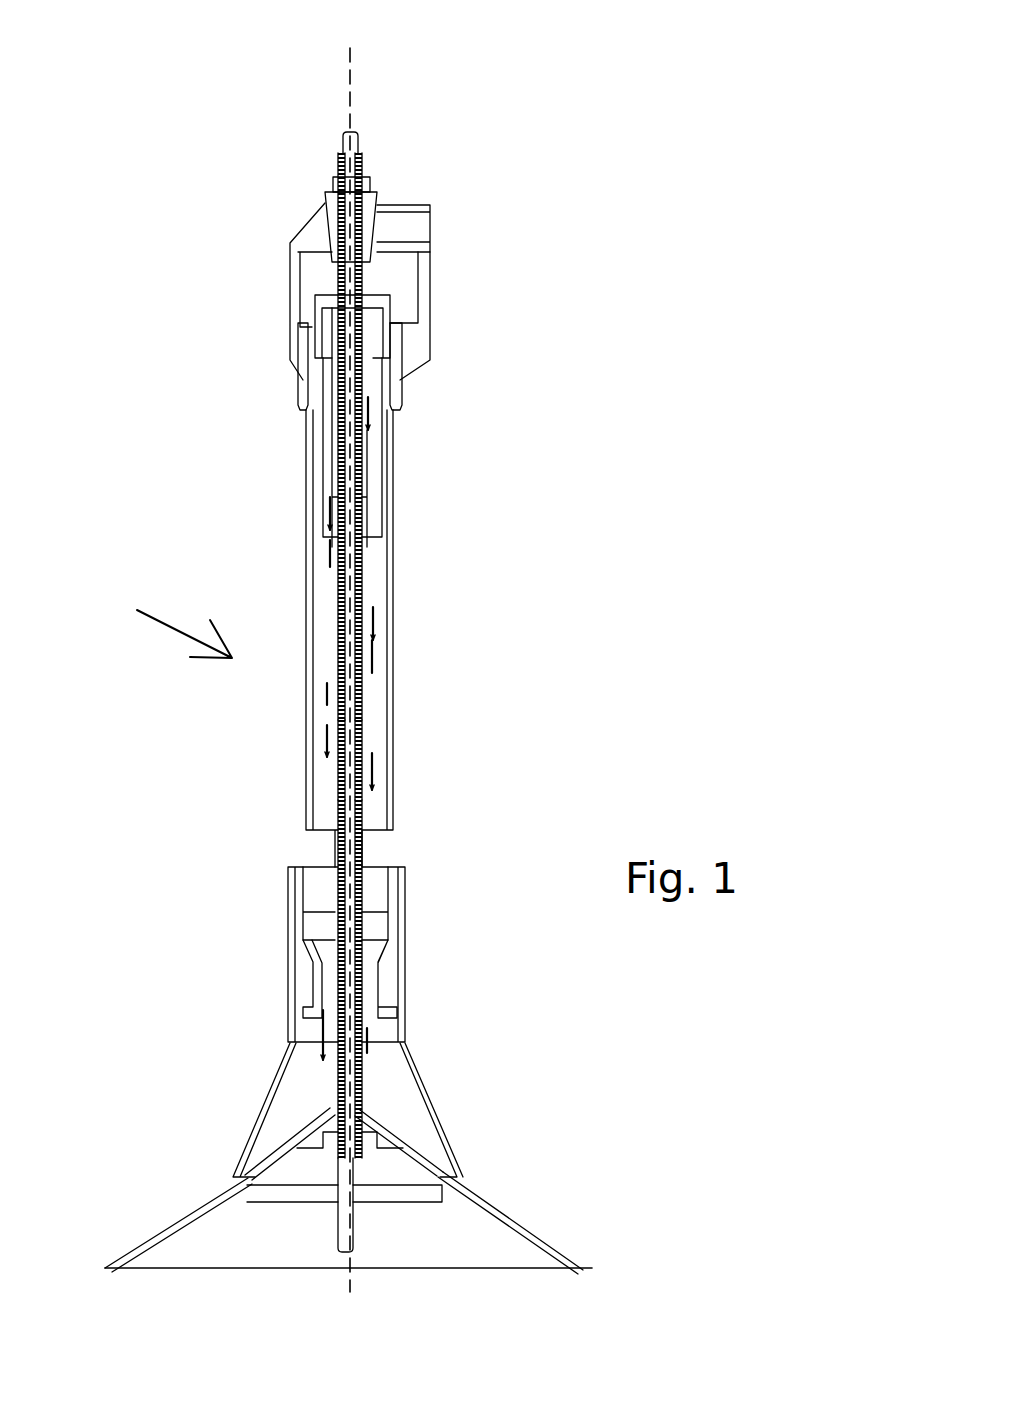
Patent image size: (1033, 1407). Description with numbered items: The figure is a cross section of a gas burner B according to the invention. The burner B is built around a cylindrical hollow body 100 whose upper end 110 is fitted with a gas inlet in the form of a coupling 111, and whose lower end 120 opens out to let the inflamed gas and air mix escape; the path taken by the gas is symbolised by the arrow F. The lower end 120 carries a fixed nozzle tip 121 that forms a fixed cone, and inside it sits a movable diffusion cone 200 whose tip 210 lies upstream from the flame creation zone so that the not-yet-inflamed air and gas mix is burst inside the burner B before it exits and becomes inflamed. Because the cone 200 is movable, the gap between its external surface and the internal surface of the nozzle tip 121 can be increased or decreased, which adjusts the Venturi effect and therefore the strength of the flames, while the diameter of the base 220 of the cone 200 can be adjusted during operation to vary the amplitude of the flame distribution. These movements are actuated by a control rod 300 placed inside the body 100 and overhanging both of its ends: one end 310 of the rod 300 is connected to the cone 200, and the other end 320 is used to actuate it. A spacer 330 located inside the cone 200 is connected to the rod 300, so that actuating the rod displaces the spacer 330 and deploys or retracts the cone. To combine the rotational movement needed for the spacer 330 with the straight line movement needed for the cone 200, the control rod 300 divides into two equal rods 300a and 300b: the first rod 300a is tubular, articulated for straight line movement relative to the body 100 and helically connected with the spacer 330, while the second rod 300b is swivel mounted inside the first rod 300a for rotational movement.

The cylindrical hollow body 100 is at (387, 635).
The upper end 110 is at (418, 352).
The coupling 111 is at (413, 226).
The lower end 120 is at (395, 983).
The fixed nozzle tip 121 is at (420, 1102).
The diffusion cone 200 is at (512, 1222).
The tip 210 is at (363, 1143).
The base 220 is at (583, 1270).
The control rod 300 is at (367, 655).
The first rod 300a is at (355, 698).
The second rod 300b is at (347, 840).
The end of control rod 310 is at (345, 1252).
The other end of control rod 320 is at (352, 133).
The spacer 330 is at (283, 1200).
The arrow F is at (373, 785).
The burner B is at (162, 603).